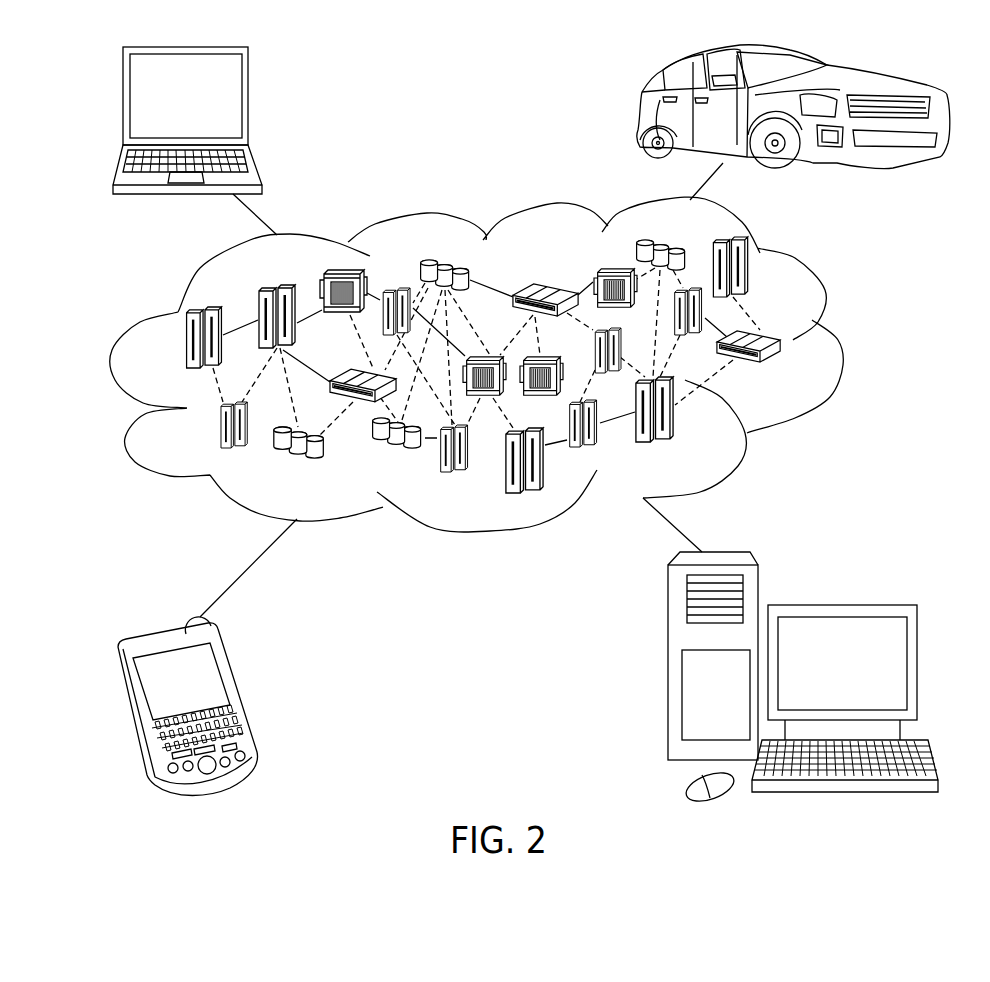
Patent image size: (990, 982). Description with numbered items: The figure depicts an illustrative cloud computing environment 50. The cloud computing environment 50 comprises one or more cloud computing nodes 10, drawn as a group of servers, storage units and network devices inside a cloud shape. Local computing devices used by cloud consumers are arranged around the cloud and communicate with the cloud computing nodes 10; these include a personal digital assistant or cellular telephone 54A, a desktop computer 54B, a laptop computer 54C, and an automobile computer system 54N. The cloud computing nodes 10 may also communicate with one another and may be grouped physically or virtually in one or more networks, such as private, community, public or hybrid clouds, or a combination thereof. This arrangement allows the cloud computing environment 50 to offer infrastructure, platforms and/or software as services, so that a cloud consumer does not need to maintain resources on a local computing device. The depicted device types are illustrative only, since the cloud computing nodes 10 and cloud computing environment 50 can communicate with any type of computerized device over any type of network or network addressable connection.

The cloud computing environment 50 is at (841, 342).
The cloud computing nodes 10 is at (788, 369).
The personal digital assistant or cellular telephone 54A is at (242, 693).
The desktop computer 54B is at (838, 603).
The laptop computer 54C is at (247, 102).
The automobile computer system 54N is at (640, 108).